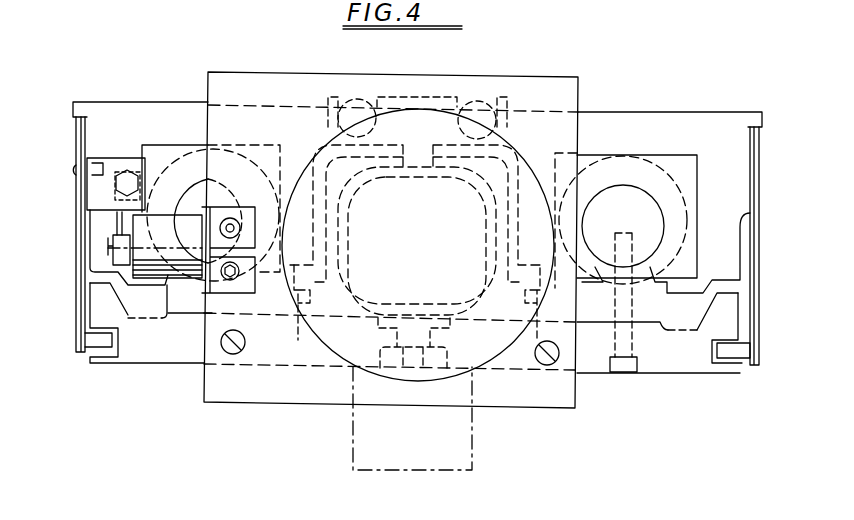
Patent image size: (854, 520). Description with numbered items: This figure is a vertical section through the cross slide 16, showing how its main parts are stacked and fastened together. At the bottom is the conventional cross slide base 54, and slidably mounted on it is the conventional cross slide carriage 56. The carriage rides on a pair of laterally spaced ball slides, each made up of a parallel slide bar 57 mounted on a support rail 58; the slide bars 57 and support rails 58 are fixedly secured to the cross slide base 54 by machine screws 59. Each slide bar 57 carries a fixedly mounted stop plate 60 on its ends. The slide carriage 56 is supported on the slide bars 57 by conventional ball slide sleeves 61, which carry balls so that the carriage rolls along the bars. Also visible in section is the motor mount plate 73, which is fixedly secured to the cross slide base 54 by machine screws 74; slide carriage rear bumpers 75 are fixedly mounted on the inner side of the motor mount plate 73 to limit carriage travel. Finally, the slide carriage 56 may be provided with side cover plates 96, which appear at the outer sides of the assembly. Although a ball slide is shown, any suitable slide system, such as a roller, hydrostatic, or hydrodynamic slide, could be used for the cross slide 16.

The cross slide 16 is at (180, 90).
The cross slide base 54 is at (707, 352).
The cross slide carriage 56 is at (682, 122).
The slide bars 57 is at (190, 197).
The support rail 58 is at (175, 300).
The machine screws 59 is at (623, 374).
The stop plates 60 is at (152, 155).
The ball slide sleeves 61 is at (263, 152).
The motor mount plate 73 is at (567, 93).
The machine screws 74 is at (236, 355).
The slide carriage rear bumpers 75 is at (358, 102).
The side cover plates 96 is at (75, 207).